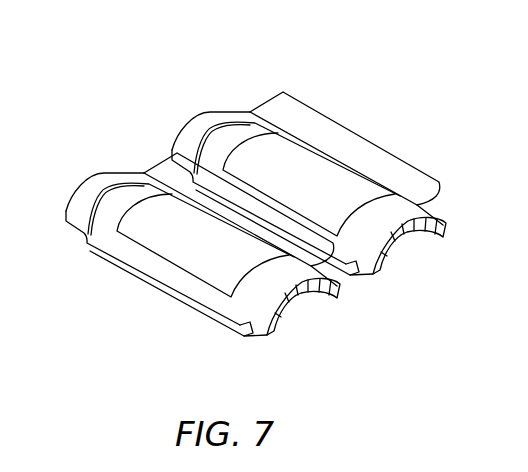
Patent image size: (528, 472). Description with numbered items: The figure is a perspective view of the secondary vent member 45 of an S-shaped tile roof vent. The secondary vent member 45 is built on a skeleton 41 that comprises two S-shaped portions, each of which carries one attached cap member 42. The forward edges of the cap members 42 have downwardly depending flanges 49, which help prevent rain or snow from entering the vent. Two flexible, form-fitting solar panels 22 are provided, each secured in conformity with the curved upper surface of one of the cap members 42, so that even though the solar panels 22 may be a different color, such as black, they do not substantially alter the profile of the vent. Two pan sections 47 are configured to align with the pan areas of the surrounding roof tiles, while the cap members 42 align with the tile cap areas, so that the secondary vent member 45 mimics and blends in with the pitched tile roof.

The solar panel 22 is at (310, 186).
The skeleton 41 is at (103, 180).
The cap member 42 is at (251, 127).
The secondary vent member 45 is at (256, 205).
The pan section 47 is at (403, 172).
The downwardly depending flange 49 is at (302, 304).